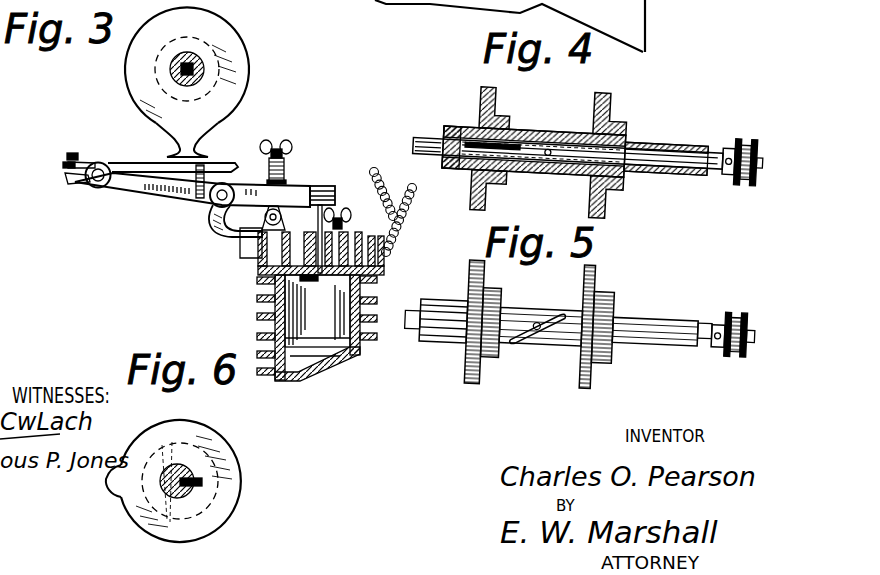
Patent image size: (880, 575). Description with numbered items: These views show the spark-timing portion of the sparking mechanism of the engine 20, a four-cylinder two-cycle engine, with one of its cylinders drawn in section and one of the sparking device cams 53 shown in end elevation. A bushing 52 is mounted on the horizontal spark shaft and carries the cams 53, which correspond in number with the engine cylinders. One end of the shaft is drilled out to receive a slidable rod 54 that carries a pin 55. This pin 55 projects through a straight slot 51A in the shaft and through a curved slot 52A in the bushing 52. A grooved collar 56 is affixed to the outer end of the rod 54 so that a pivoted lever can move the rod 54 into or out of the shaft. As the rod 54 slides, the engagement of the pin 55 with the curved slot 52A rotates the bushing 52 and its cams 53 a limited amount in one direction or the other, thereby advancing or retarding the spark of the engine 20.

In FIG. 3, the engine 20 is at (355, 299).
In FIG. 3, the cams 53 is at (232, 100).
In FIG. 4, the cams 53 is at (478, 100).
In FIG. 5, the cams 53 is at (467, 275).
In FIG. 6, the cams 53 is at (231, 448).
In FIG. 4, the slidable rod 54 is at (640, 141).
In FIG. 5, the slidable rod 54 is at (709, 312).
In FIG. 4, the pin 55 is at (532, 167).
In FIG. 5, the pin 55 is at (537, 318).
In FIG. 4, the grooved collar 56 is at (743, 172).
In FIG. 5, the grooved collar 56 is at (733, 347).
In FIG. 5, the bushing 52 is at (440, 338).
In FIG. 5, the curved slot 52A is at (512, 340).
In FIG. 5, the straight slot 51A is at (560, 342).